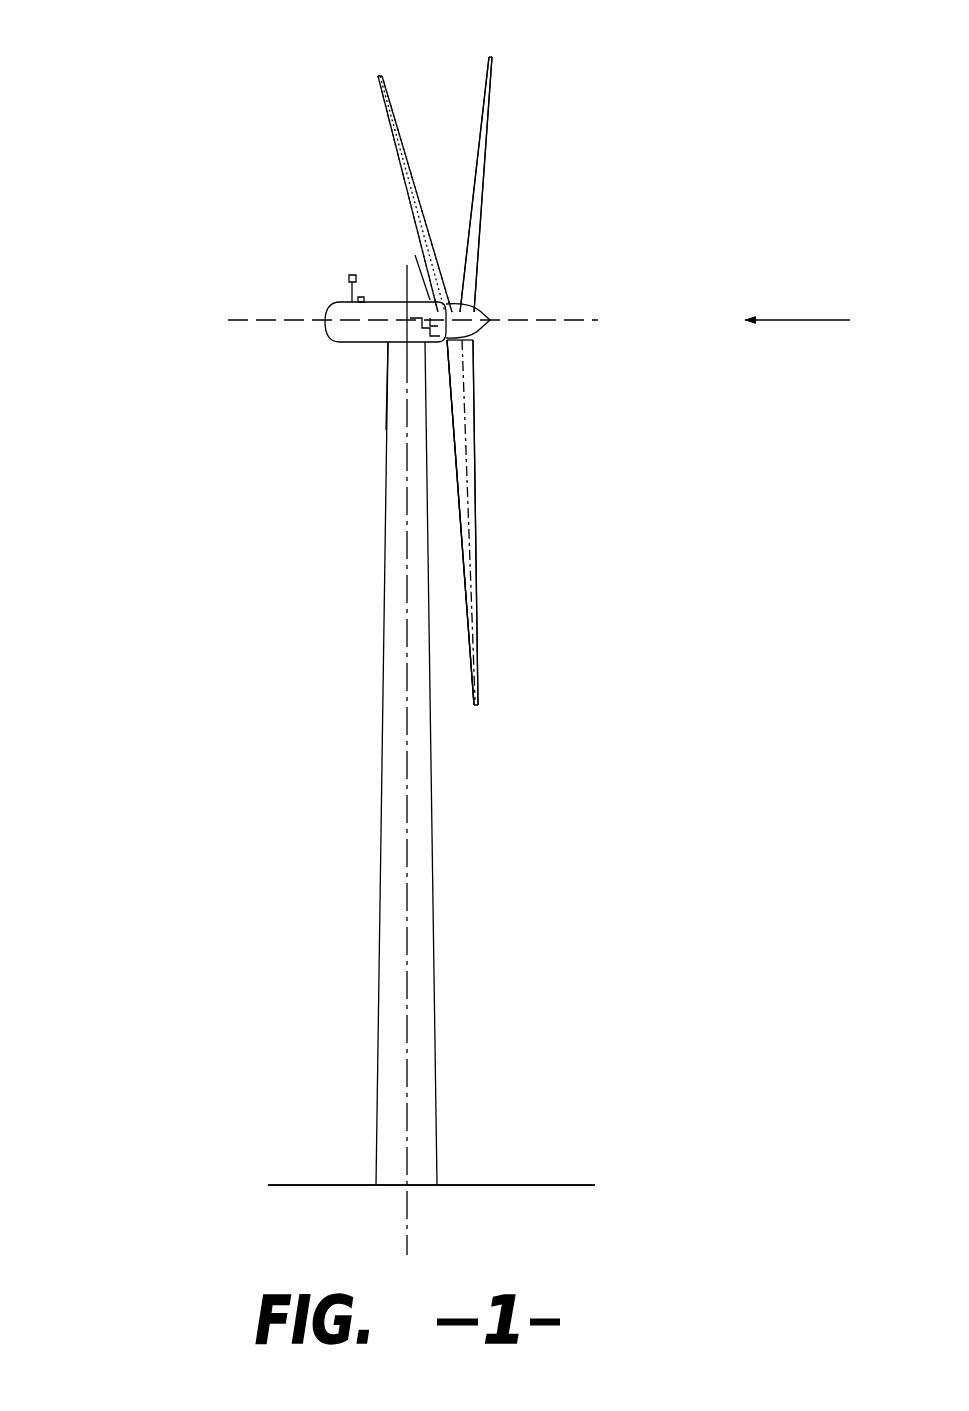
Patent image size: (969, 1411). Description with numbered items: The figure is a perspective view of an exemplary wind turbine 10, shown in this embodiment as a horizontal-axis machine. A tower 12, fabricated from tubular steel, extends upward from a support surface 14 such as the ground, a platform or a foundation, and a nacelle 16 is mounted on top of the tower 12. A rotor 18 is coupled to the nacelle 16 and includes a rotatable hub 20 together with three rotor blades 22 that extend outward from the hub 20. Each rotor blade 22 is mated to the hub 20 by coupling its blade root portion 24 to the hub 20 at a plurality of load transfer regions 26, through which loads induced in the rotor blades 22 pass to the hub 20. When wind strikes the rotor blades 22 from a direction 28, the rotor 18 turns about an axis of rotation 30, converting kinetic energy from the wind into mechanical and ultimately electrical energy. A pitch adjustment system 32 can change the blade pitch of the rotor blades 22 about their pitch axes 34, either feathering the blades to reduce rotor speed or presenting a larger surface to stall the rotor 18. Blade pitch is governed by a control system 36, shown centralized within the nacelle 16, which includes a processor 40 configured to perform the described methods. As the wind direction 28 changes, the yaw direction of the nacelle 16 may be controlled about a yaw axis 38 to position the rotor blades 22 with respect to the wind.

The wind turbine 10 is at (141, 86).
The tower 12 is at (380, 930).
The support surface 14 is at (328, 1185).
The nacelle 16 is at (358, 345).
The rotor 18 is at (502, 210).
The rotatable hub 20 is at (488, 312).
The rotor blade 22 is at (400, 155).
The blade root portion 24 is at (475, 432).
The load transfer regions 26 is at (455, 342).
The direction 28 is at (815, 318).
The axis of rotation 30 is at (560, 322).
The pitch adjustment system 32 is at (462, 378).
The pitch axes 34 is at (375, 82).
The control system 36 is at (390, 383).
The yaw axis 38 is at (410, 812).
The processor 40 is at (420, 280).